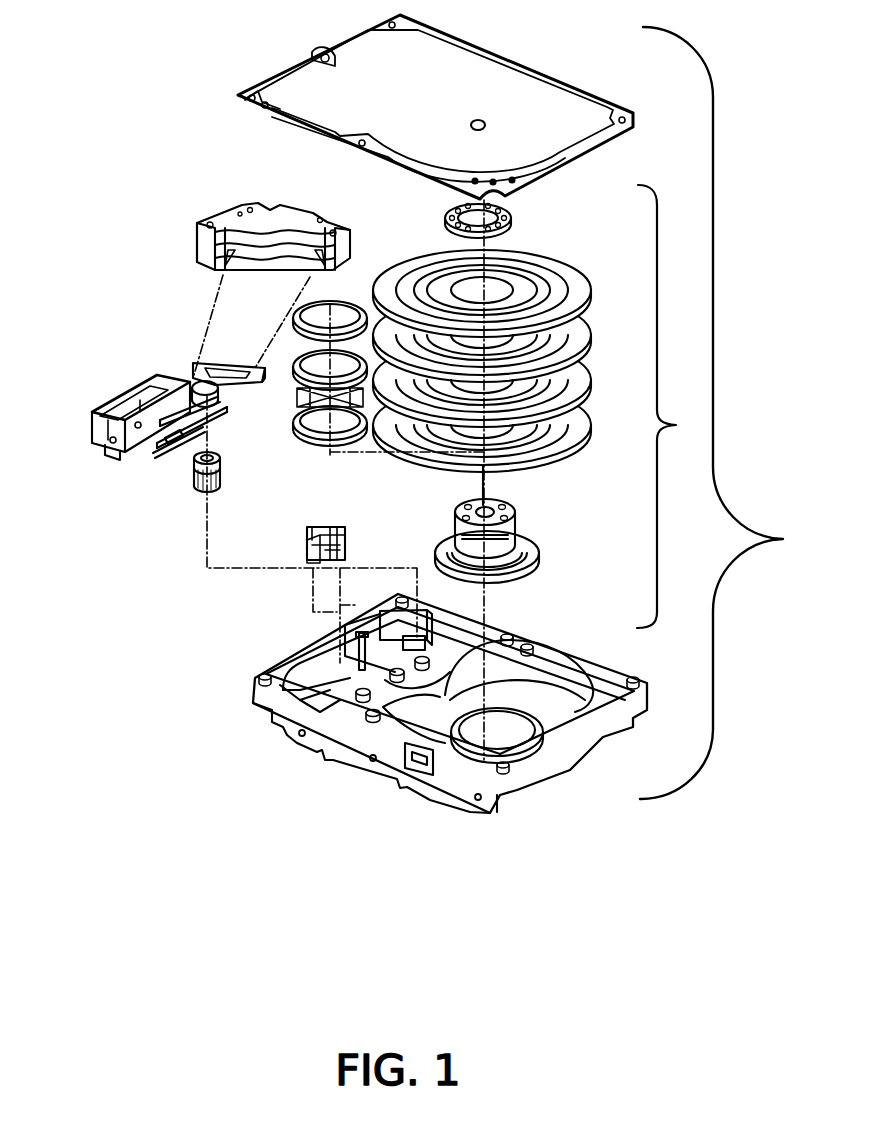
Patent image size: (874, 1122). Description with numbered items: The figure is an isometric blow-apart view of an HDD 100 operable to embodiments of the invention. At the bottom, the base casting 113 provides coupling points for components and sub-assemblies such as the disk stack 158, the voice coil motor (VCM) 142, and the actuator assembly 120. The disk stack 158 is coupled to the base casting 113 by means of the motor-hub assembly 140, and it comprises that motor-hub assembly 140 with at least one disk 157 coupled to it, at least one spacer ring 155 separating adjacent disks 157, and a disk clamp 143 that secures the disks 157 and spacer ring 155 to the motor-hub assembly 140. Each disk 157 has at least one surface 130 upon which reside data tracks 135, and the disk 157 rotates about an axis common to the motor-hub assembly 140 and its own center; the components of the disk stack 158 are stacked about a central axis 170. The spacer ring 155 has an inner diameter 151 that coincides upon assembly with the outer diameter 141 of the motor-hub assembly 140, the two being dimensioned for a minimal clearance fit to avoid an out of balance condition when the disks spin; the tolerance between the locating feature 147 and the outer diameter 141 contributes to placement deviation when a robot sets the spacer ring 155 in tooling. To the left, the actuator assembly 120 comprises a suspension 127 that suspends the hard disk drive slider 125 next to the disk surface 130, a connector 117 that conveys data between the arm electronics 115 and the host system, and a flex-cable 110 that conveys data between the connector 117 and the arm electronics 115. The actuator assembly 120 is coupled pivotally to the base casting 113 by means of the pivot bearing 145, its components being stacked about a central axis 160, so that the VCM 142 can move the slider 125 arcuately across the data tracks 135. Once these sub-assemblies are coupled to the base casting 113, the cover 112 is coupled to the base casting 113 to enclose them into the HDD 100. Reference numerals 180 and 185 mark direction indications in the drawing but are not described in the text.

The HDD 100 is at (805, 408).
The flex-cable 110 is at (187, 390).
The cover 112 is at (523, 112).
The base casting 113 is at (267, 705).
The arm electronics (A/E) 115 is at (185, 373).
The connector 117 is at (105, 406).
The actuator assembly 120 is at (139, 470).
The hard disk drive slider 125 is at (157, 455).
The suspension 127 is at (173, 442).
The disk surface 130 is at (507, 386).
The data tracks 135 is at (432, 266).
The motor-hub assembly 140 is at (520, 560).
The outer diameter (OD) 141 is at (507, 546).
The voice coil motor (VCM) 142 is at (192, 213).
The disk clamp 143 is at (445, 218).
The pivot bearing 145 is at (200, 492).
The locating feature 147 is at (483, 503).
The inner diameter (ID) 151 is at (327, 393).
The spacer ring 155 is at (297, 372).
The disk 157 is at (585, 318).
The disk stack 158 is at (673, 406).
The axis 160 is at (205, 530).
The axis 170 is at (490, 605).
The assembly direction 180 is at (517, 513).
The assembly direction 185 is at (363, 297).